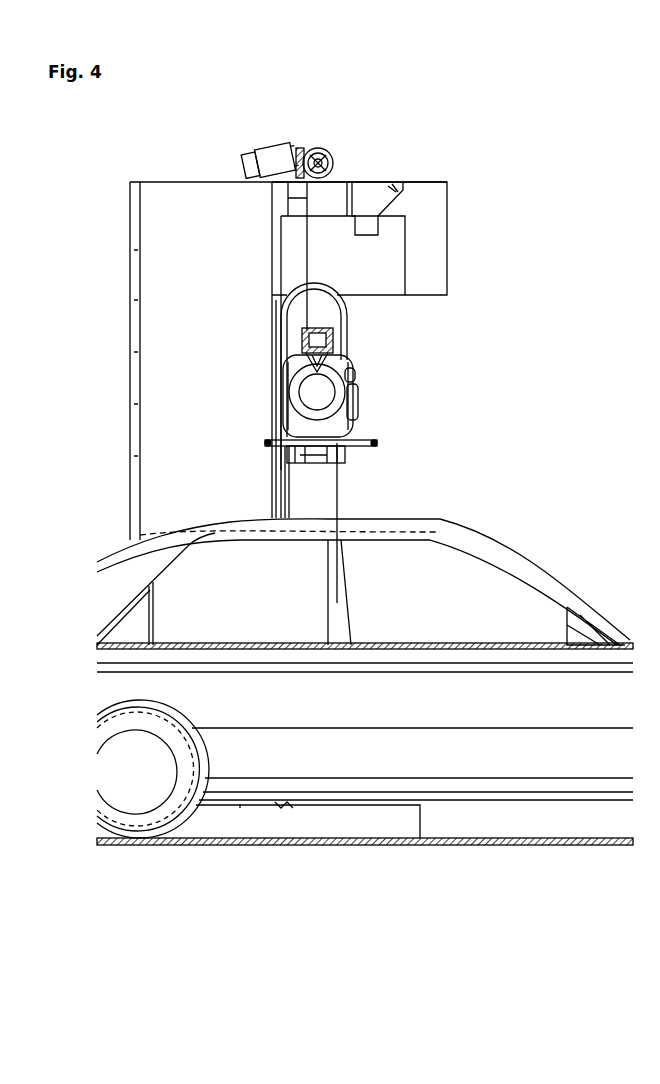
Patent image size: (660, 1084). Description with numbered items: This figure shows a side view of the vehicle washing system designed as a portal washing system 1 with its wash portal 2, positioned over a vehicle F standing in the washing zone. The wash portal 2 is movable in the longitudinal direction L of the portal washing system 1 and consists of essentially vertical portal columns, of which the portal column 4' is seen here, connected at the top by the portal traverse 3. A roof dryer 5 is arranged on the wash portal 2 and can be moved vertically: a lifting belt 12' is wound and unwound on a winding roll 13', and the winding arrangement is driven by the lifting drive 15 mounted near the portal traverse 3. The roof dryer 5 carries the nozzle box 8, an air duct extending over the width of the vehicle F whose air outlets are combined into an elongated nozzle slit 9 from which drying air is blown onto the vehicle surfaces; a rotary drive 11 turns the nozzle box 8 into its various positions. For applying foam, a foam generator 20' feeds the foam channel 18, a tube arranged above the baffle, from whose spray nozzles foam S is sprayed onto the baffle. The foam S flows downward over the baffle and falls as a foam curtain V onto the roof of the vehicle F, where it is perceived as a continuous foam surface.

The portal washing system 1 is at (518, 138).
The wash portal 2 is at (133, 180).
The portal traverse 3 is at (432, 181).
The portal column 4' is at (169, 350).
The roof dryer 5 is at (426, 352).
The nozzle box 8 is at (290, 392).
The nozzle slit 9 is at (302, 358).
The rotary drive 11 is at (292, 418).
The lifting belt 12' is at (343, 350).
The winding roll for lifting belt 13' is at (342, 140).
The lifting drive 15 is at (250, 156).
The foam channel 18 is at (335, 340).
The foam generator 20' is at (386, 402).
The foam spray jets S is at (352, 376).
The foam curtain V is at (340, 488).
The longitudinal direction L is at (633, 448).
The vehicle F is at (575, 592).